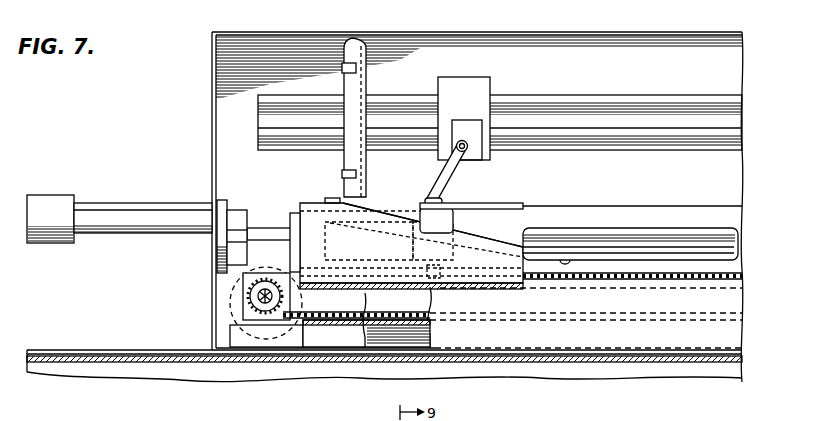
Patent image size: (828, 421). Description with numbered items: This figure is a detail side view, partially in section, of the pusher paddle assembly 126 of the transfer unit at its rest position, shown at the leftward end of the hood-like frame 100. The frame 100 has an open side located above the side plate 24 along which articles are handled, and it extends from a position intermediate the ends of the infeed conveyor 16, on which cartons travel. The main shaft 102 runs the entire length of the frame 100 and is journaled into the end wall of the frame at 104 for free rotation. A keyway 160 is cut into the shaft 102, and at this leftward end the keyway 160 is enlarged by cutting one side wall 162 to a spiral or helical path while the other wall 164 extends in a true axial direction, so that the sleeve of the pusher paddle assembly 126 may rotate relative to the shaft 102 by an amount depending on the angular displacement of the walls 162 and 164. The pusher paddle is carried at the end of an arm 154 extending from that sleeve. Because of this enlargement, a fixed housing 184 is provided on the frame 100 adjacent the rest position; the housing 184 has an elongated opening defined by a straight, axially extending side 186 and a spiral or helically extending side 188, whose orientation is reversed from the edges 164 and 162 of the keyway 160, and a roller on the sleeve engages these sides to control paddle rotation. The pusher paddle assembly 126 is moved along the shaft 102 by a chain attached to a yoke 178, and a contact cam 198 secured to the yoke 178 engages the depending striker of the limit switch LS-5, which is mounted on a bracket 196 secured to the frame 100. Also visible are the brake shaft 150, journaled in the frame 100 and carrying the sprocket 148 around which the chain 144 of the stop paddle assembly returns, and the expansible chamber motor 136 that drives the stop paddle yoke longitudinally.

The frame 100 is at (331, 32).
The bracket 196 is at (621, 97).
The pusher paddle assembly 126 is at (373, 84).
The arm 154 is at (344, 150).
The limit switch LS-5 is at (473, 77).
The infeed conveyor 16 is at (220, 363).
The side plate 24 is at (529, 309).
The expansible chamber motor 136 is at (131, 233).
The journal 104 is at (218, 263).
The brake shaft 150 is at (258, 296).
The sprocket 148 is at (281, 297).
The chain 144 is at (361, 320).
The fixed housing 184 is at (297, 200).
The spiral side wall of keyway 162 is at (374, 232).
The axial side wall of keyway 164 is at (363, 259).
The helical side 188 is at (497, 244).
The contact cam 198 is at (413, 218).
The yoke 178 is at (453, 222).
The straight side 186 is at (497, 203).
The main shaft 102 is at (656, 228).
The keyway 160 is at (566, 259).